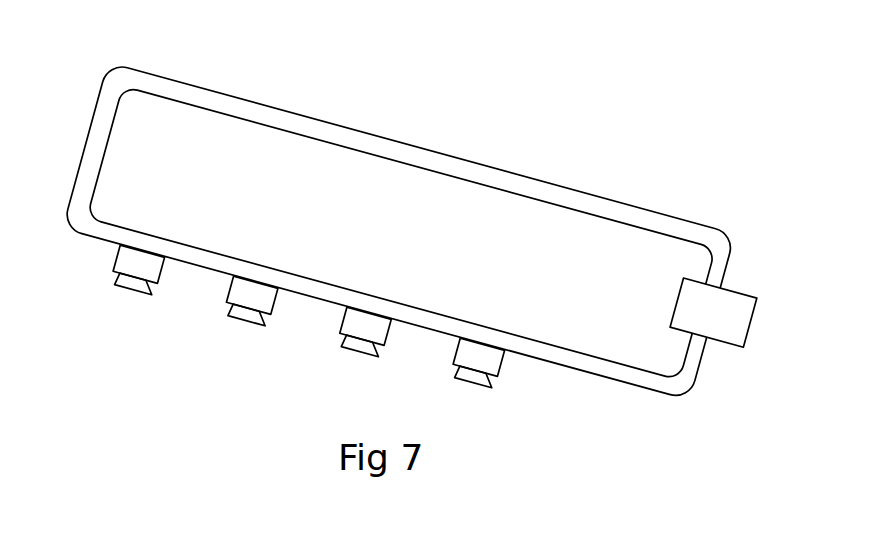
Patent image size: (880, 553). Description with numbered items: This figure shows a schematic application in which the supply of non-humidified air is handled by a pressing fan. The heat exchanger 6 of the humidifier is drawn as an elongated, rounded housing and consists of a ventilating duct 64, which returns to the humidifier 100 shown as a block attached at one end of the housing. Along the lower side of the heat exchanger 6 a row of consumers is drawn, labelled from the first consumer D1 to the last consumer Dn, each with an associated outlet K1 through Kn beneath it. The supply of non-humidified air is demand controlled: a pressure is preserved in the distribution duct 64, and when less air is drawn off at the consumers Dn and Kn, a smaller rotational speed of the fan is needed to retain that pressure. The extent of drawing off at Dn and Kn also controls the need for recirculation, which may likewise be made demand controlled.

The heat exchanger 6 is at (466, 99).
The ventilating duct 64 is at (507, 177).
The humidifier 100 is at (720, 323).
The consumer D1 is at (130, 258).
The consumer Dn is at (485, 362).
The consumer K1 is at (128, 282).
The consumer Kn is at (472, 375).